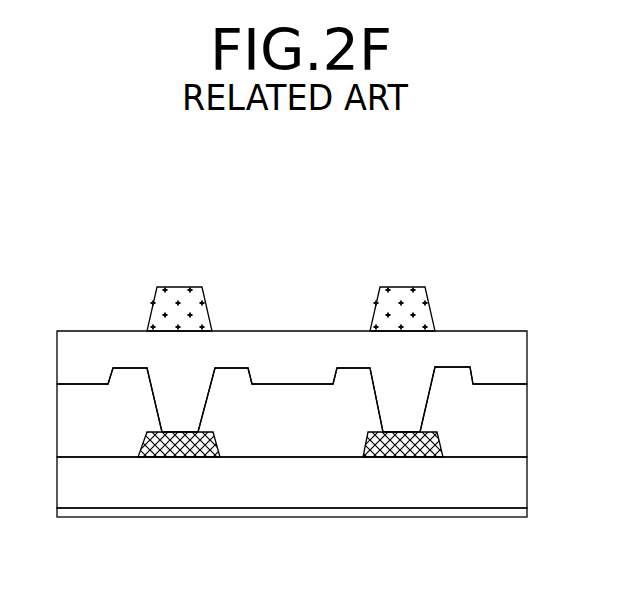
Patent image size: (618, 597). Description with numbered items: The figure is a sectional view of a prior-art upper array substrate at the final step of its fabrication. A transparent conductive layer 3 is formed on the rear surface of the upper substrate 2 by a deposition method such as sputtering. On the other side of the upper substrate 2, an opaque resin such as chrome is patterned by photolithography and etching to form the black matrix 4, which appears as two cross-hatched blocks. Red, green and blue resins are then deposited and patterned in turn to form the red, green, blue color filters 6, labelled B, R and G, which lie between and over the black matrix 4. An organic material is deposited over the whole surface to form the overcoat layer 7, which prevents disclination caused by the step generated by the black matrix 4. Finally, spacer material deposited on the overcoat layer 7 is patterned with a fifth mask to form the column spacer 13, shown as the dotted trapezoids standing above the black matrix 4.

The upper substrate 2 is at (527, 478).
The transparent conductive layer 3 is at (527, 513).
The black matrix 4 is at (402, 450).
The red, green, blue color filters 6 is at (527, 418).
The overcoat layer 7 is at (527, 348).
The column spacer 13 is at (404, 292).